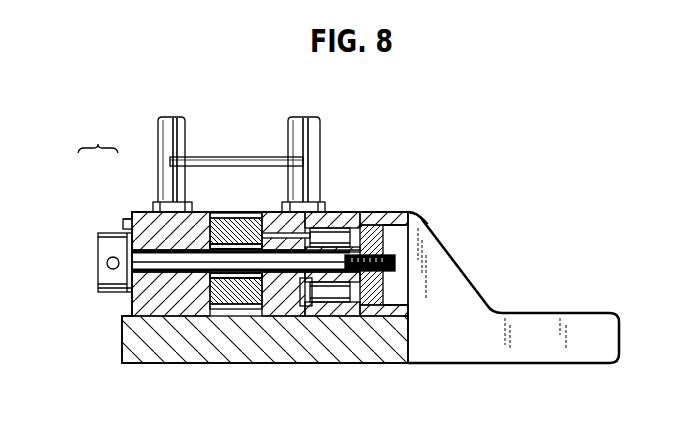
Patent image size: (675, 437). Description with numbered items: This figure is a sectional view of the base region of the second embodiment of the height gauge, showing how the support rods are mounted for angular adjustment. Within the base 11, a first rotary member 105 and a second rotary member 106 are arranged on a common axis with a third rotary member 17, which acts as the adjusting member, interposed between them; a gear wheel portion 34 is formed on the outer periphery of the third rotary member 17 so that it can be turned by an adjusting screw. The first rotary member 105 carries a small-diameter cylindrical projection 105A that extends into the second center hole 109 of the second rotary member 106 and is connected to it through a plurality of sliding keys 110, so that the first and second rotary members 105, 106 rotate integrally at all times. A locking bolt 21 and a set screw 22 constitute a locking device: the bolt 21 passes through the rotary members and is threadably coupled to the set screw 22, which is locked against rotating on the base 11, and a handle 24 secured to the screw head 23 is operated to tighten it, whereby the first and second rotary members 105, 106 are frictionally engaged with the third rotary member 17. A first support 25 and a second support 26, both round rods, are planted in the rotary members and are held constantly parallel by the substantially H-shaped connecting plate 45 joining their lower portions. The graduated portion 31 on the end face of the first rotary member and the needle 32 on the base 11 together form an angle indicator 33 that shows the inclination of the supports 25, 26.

The base 11 is at (450, 263).
The third rotary member 17 is at (230, 215).
The locking bolt 21 is at (112, 292).
The set screw 22 is at (424, 216).
The screw head 23 is at (100, 240).
The handle 24 is at (106, 263).
The first support 25 is at (158, 124).
The second support 26 is at (322, 128).
The graduated portion 31 is at (126, 216).
The needle 32 is at (122, 222).
The angle indicator 33 is at (98, 139).
The gear wheel portion 34 is at (212, 305).
The connecting plate 45 is at (210, 157).
The first rotary member 105 is at (152, 212).
The cylindrical projection 105A is at (287, 300).
The second rotary member 106 is at (357, 214).
The second center hole 109 is at (334, 282).
The sliding keys 110 is at (330, 213).